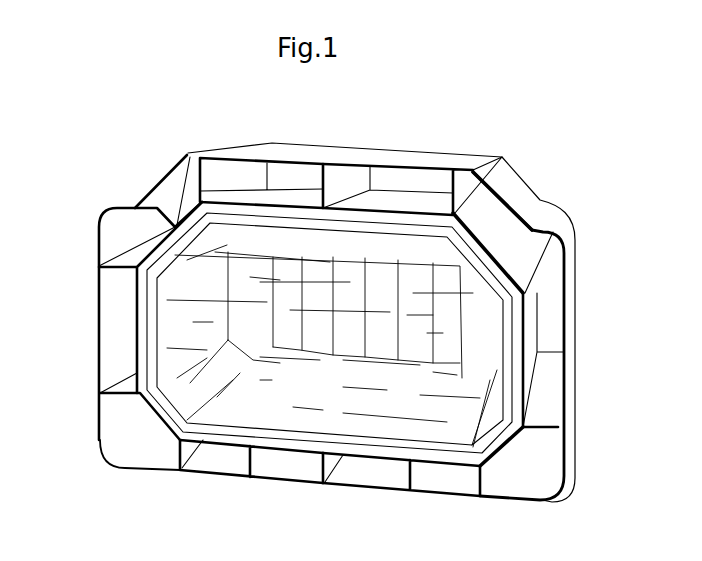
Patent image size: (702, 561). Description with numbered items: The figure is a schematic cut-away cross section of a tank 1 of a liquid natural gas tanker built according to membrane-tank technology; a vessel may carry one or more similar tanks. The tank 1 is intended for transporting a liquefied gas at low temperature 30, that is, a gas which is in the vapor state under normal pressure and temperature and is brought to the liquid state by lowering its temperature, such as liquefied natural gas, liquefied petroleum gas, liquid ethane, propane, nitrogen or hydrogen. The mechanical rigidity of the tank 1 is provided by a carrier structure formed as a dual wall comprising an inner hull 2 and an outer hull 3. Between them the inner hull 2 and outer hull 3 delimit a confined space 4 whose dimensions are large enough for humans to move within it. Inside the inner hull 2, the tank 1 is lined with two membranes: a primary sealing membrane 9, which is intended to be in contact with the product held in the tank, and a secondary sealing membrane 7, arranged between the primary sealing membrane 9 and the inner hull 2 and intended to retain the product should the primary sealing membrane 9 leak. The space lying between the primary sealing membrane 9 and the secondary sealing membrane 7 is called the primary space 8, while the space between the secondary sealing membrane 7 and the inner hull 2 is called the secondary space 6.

The tank 1 is at (94, 172).
The inner hull 2 is at (375, 202).
The outer hull 3 is at (306, 152).
The liquefied gas at low temperature 30 is at (415, 247).
The confined space 4 is at (122, 307).
The secondary space 6 is at (250, 443).
The secondary sealing membrane 7 is at (410, 453).
The primary space 8 is at (312, 435).
The primary sealing membrane 9 is at (168, 418).